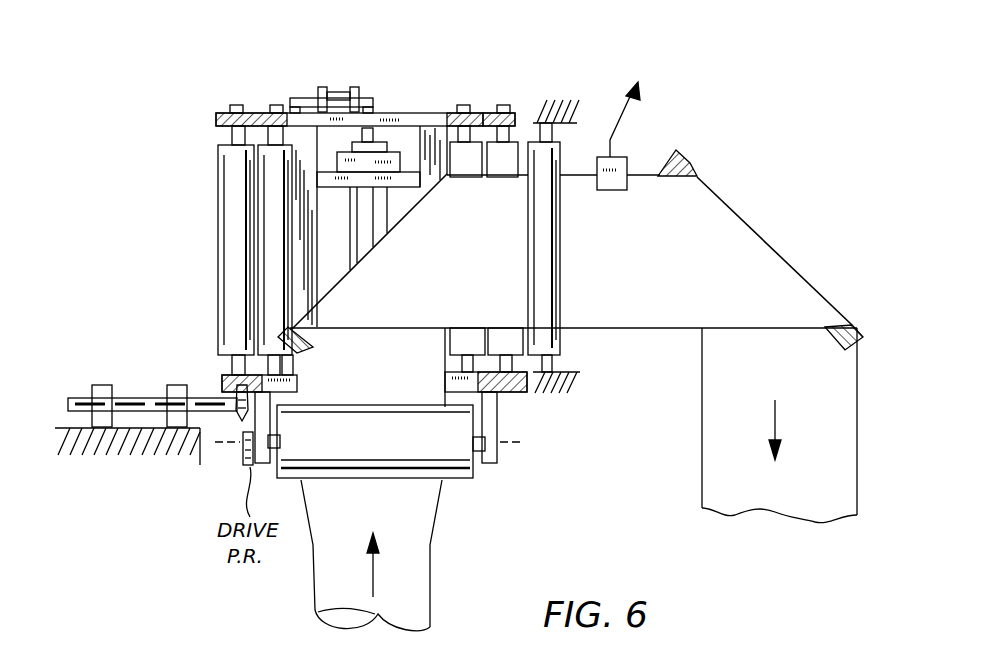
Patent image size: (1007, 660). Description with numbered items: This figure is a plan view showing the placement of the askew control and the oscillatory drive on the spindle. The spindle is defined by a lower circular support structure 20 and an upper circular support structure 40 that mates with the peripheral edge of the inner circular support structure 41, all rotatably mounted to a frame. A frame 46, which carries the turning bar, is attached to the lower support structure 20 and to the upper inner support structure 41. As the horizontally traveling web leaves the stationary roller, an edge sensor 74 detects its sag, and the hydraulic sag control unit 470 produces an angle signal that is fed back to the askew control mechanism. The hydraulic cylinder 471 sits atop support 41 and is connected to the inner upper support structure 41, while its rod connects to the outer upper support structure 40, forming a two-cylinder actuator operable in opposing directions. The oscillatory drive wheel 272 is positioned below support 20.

The upper circular support structure 40 is at (222, 113).
The circular support structure 41 is at (267, 112).
The hydraulic cylinder 471 is at (338, 90).
The sag control unit 470 is at (390, 163).
The frame 46 is at (430, 137).
The edge sensor 74 is at (617, 162).
The lower circular support structure 20 is at (230, 375).
The oscillatory drive wheel 272 is at (243, 420).